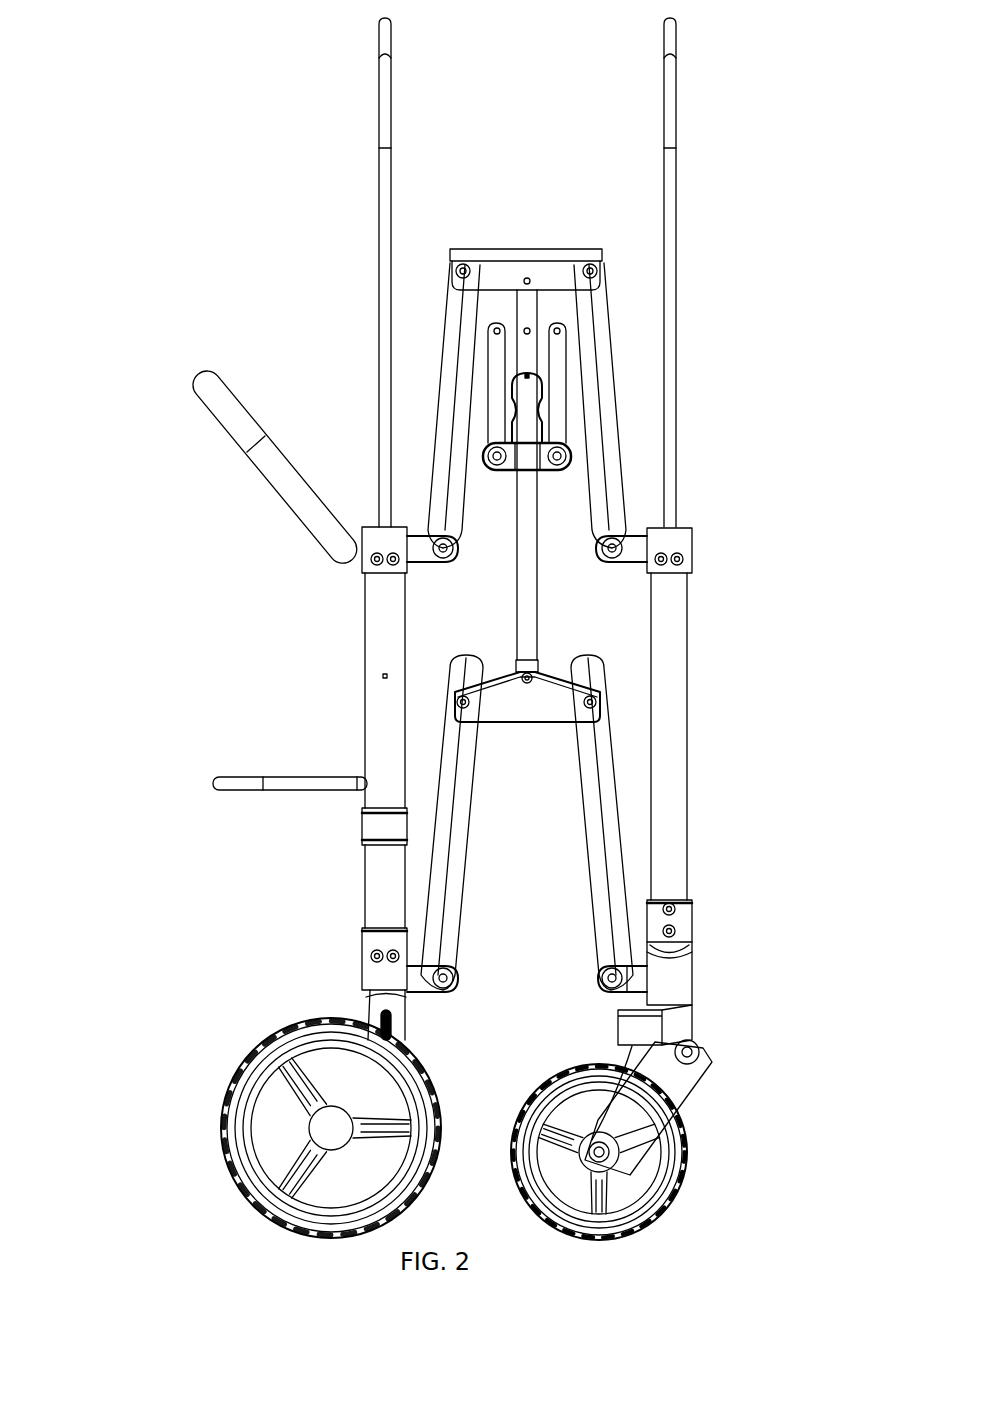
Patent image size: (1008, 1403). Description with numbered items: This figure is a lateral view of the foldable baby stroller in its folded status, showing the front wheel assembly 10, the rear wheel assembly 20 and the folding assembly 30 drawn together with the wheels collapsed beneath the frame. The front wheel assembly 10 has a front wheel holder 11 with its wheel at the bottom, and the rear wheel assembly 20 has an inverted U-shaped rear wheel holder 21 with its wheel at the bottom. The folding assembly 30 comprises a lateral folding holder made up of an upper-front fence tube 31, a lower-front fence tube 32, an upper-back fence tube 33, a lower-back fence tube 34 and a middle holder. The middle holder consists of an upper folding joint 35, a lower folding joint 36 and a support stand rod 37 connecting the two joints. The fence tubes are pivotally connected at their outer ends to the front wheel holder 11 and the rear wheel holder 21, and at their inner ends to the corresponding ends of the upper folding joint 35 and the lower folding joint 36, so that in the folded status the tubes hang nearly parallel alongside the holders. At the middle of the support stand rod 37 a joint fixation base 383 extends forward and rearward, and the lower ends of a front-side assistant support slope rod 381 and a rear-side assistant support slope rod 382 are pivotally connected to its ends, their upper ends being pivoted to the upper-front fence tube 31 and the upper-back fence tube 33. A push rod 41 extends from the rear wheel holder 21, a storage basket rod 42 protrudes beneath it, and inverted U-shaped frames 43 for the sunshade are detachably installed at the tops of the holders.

The front wheel assembly 10 is at (682, 852).
The front wheel holder 11 is at (677, 602).
The rear wheel assembly 20 is at (372, 885).
The rear wheel holder 21 is at (372, 592).
The folding assembly 30 is at (538, 565).
The upper-front fence tube 31 is at (450, 392).
The lower-front fence tube 32 is at (455, 762).
The upper-back fence tube 33 is at (603, 430).
The lower-back fence tube 34 is at (592, 766).
The upper folding joint 35 is at (511, 258).
The lower folding joint 36 is at (520, 708).
The support stand rod 37 is at (528, 506).
The front-side assistant support slope rod 381 is at (557, 386).
The rear-side assistant support slope rod 382 is at (496, 366).
The joint fixation base 383 is at (566, 456).
The push rod 41 is at (237, 415).
The storage basket rod 42 is at (250, 781).
The inverted U-shaped frame 43 is at (383, 85).